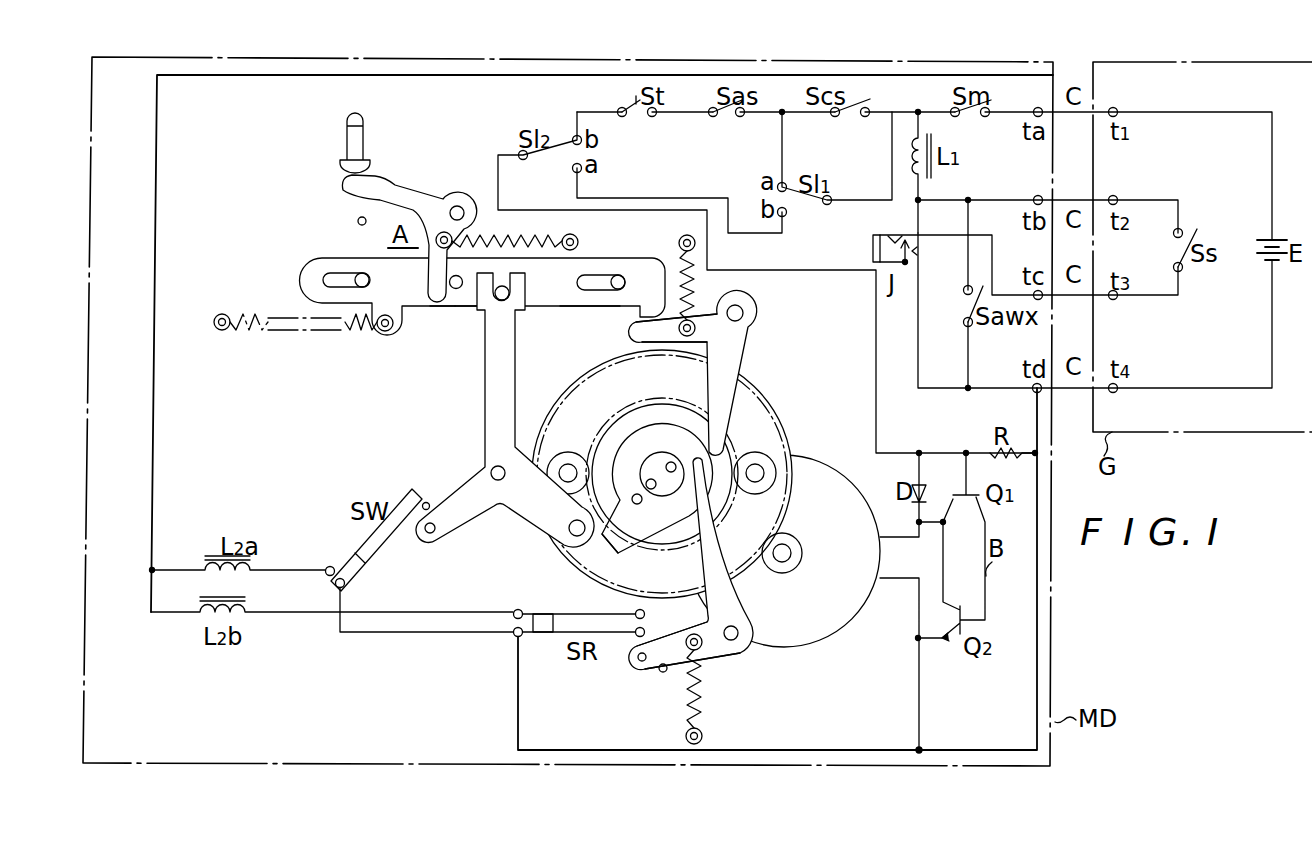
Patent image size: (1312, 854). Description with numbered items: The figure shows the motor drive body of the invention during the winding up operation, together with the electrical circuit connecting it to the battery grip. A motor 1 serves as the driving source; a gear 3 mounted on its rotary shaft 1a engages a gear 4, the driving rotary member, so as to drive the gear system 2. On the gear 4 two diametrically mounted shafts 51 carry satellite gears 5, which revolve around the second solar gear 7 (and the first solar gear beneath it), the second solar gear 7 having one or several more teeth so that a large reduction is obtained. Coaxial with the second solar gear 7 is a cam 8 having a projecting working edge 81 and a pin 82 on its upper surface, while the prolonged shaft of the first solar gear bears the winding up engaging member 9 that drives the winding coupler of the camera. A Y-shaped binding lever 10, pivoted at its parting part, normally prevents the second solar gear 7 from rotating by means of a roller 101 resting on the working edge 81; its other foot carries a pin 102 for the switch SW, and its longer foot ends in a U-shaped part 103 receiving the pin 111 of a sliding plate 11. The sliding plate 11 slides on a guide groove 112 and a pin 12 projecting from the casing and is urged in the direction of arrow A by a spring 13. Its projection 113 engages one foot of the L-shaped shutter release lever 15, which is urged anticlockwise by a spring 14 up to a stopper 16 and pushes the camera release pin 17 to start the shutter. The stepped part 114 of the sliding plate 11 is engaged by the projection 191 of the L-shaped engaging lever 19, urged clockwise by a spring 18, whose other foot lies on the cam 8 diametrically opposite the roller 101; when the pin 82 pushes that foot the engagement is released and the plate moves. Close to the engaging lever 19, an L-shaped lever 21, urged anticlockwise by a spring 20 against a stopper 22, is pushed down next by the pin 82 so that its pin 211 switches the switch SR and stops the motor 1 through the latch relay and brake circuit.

The motor 1 is at (845, 622).
The rotary shaft 1a is at (783, 563).
The gear system 2 is at (762, 380).
The gear 3 is at (790, 530).
The gear 4 is at (750, 418).
The satellite gears 5 is at (548, 470).
The shafts 51 is at (560, 462).
The second solar gear 7 is at (597, 448).
The cam 8 is at (610, 440).
The working edge 81 is at (608, 548).
The pin 82 is at (639, 504).
The winding up engaging member 9 is at (656, 464).
The binding lever 10 is at (485, 375).
The roller 101 is at (559, 550).
The pin 102 is at (432, 538).
The U-shaped end 103 is at (520, 300).
The sliding plate 11 is at (415, 302).
The pin 111 is at (468, 308).
The guide groove 112 is at (328, 282).
The projection 113 is at (447, 304).
The stepped part 114 is at (543, 308).
The pin 12 is at (358, 281).
The spring 13 is at (259, 340).
The spring 14 is at (525, 238).
The shutter release lever 15 is at (410, 190).
The stopper 16 is at (359, 220).
The camera release pin 17 is at (358, 150).
The spring 18 is at (697, 283).
The engaging lever 19 is at (733, 342).
The projection 191 is at (632, 335).
The spring 20 is at (700, 700).
The lever 21 is at (719, 650).
The pin 211 is at (636, 659).
The stopper 22 is at (662, 672).